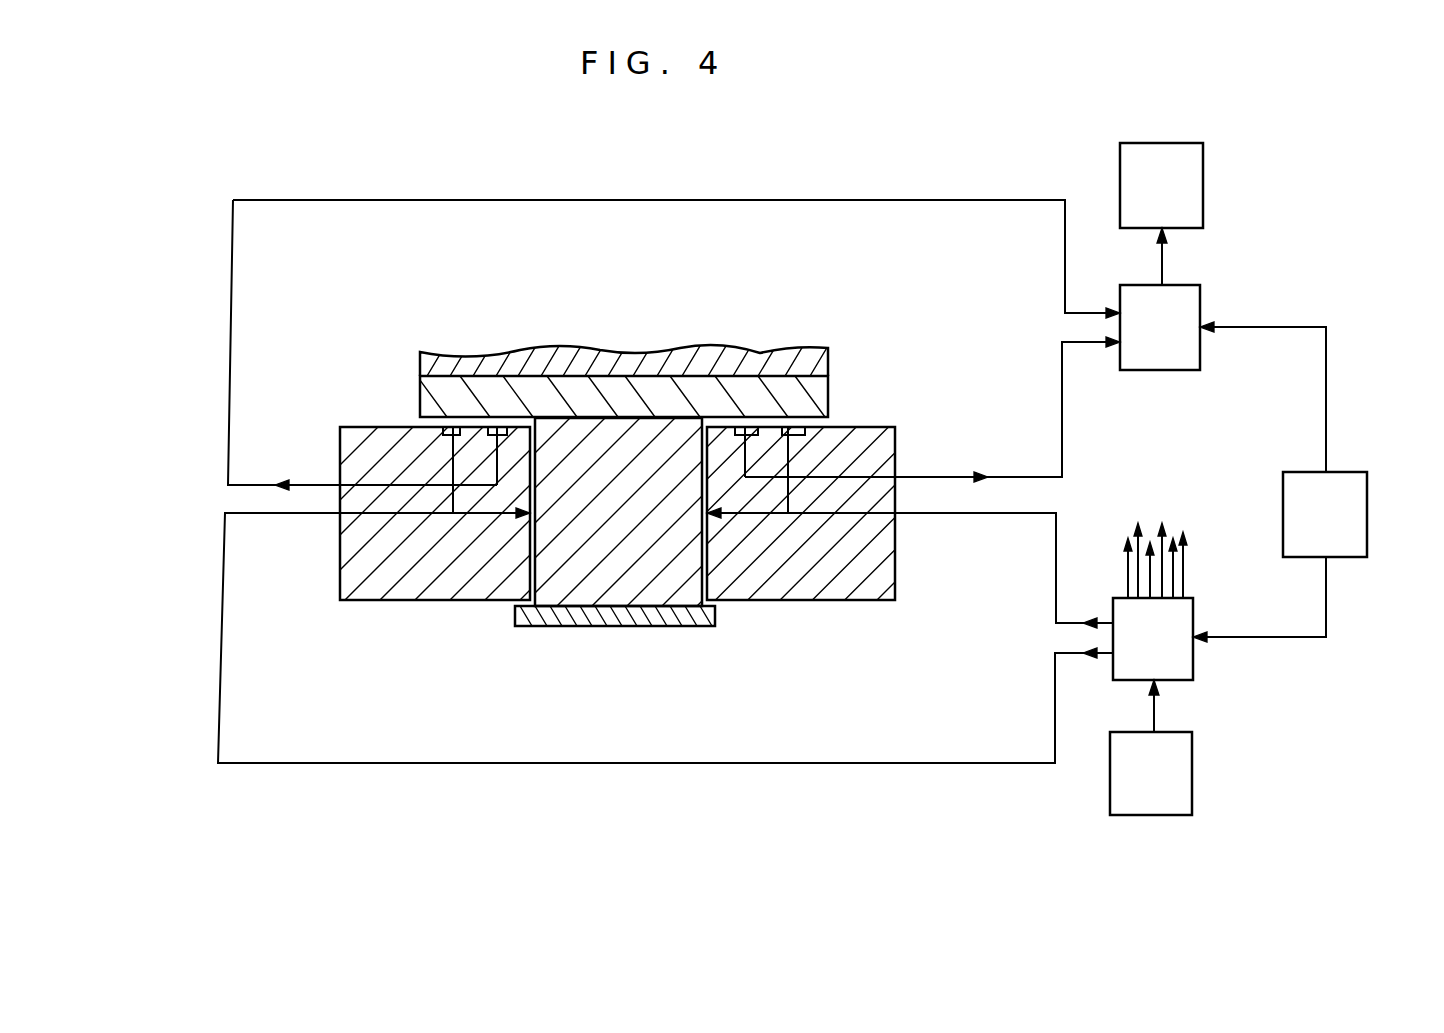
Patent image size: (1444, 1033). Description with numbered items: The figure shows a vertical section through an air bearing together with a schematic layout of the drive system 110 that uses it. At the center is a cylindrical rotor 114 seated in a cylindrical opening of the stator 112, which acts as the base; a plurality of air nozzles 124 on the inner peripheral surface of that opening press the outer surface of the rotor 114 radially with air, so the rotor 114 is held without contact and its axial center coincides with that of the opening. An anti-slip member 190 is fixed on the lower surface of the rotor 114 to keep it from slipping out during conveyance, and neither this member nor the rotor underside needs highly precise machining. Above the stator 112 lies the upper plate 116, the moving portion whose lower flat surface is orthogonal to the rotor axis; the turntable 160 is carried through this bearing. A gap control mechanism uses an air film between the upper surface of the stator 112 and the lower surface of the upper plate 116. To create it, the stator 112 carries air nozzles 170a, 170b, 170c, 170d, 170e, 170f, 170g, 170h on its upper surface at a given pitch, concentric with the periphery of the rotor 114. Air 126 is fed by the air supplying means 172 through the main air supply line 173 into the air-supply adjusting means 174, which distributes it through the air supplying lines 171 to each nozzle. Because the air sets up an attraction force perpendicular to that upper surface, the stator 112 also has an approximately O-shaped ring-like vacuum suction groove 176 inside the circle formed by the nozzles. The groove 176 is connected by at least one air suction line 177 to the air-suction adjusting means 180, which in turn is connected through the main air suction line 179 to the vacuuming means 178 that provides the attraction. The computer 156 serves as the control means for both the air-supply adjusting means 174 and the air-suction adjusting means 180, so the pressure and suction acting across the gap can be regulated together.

The air bearing drive system 110 is at (785, 286).
The stator 112 is at (888, 587).
The rotor 114 is at (668, 585).
The upper plate 116 is at (473, 390).
The air nozzles 124 is at (527, 516).
The air 126 is at (452, 450).
The computer 156 is at (1367, 512).
The turntable 160 is at (681, 353).
The air nozzle 170a is at (1184, 532).
The air nozzle 170b is at (1173, 536).
The air nozzle 170c is at (790, 425).
The air nozzle 170d is at (1161, 522).
The air nozzle 170e is at (1150, 530).
The air nozzle 170f is at (1138, 522).
The air nozzle 170g is at (420, 376).
The air nozzle 170h is at (1130, 530).
The air supplying lines 171 is at (450, 465).
The air supplying means 172 is at (1192, 768).
The main air supply line 173 is at (1156, 712).
The air-supply adjusting means 174 is at (1193, 660).
The vacuum suction groove 176 is at (500, 415).
The air suction lines 177 is at (983, 201).
The vacuuming means 178 is at (1203, 183).
The main air suction line 179 is at (1165, 266).
The air-suction adjusting means 180 is at (1200, 356).
The anti-slip member 190 is at (588, 627).